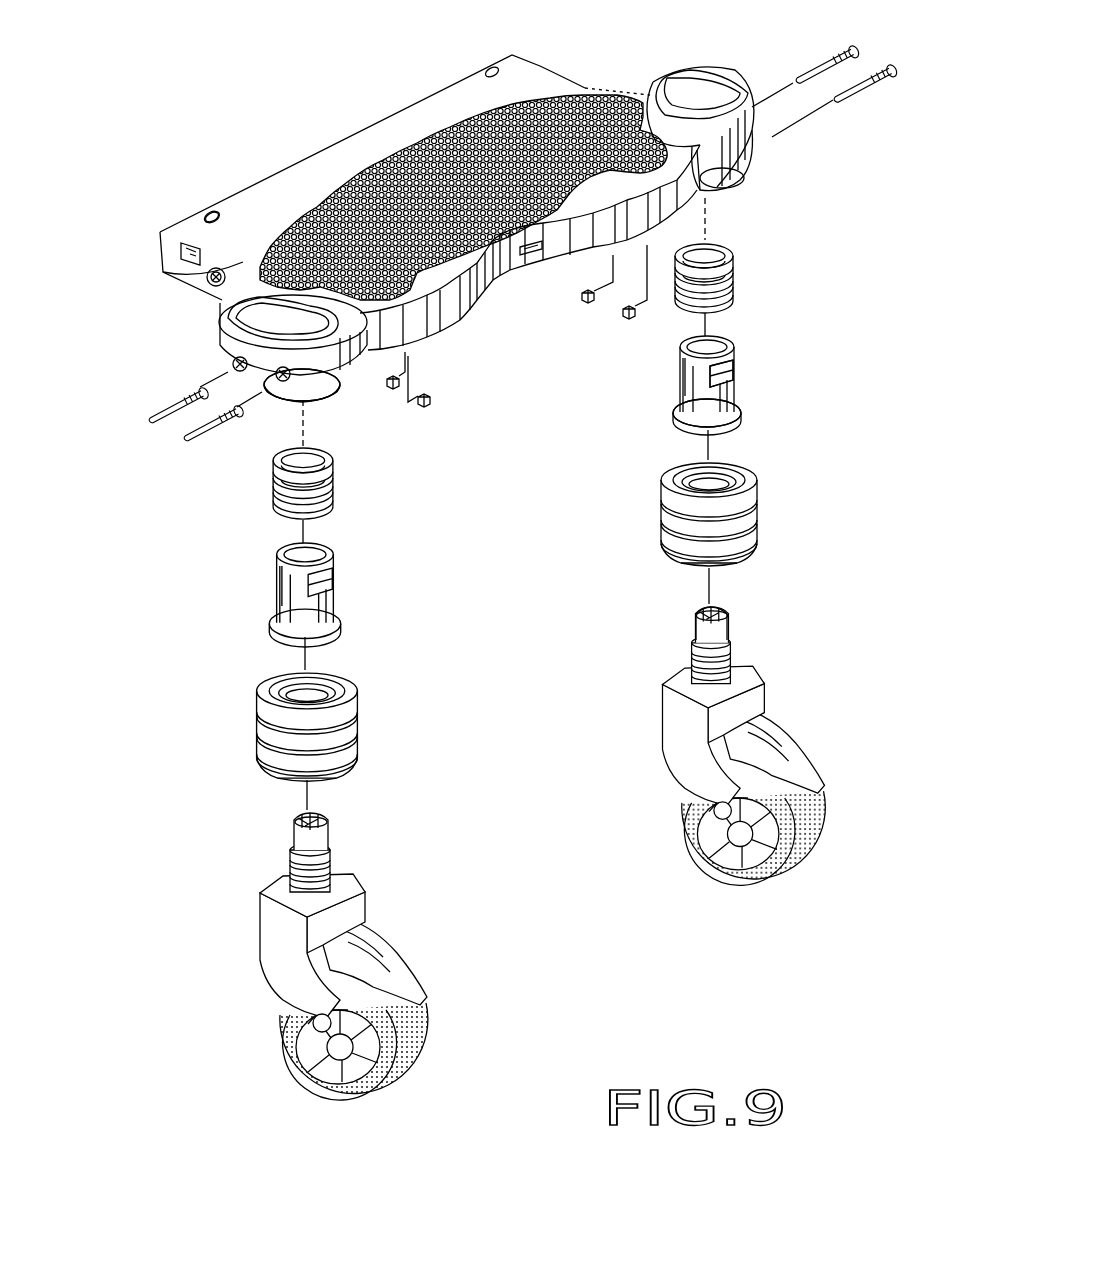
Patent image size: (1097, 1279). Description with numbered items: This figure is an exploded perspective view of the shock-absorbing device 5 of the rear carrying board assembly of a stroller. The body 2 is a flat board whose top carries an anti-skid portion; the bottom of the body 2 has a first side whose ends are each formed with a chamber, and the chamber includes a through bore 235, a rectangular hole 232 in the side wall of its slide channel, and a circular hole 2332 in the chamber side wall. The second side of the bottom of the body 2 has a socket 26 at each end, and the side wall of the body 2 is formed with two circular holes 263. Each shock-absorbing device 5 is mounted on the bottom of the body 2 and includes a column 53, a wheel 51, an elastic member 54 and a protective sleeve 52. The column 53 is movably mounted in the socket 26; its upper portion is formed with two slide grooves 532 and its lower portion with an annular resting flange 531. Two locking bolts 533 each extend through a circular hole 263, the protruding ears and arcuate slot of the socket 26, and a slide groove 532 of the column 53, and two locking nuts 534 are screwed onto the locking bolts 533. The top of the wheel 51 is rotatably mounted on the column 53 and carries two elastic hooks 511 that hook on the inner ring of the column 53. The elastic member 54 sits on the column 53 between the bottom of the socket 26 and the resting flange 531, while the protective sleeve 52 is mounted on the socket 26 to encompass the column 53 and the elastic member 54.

The body 2 is at (346, 125).
The through bore 235 is at (208, 214).
The rectangular hole 232 is at (190, 254).
The circular hole 2332 is at (212, 280).
The circular holes 263 is at (228, 363).
The socket 26 is at (314, 392).
The locking bolts 533 is at (822, 66).
The locking nuts 534 is at (585, 302).
The shock-absorbing device 5 is at (888, 252).
The elastic member 54 is at (735, 276).
The column 53 is at (766, 387).
The slide grooves 532 is at (740, 362).
The annular resting flange 531 is at (745, 418).
The protective sleeve 52 is at (774, 512).
The wheel 51 is at (846, 752).
The elastic hooks 511 is at (722, 612).